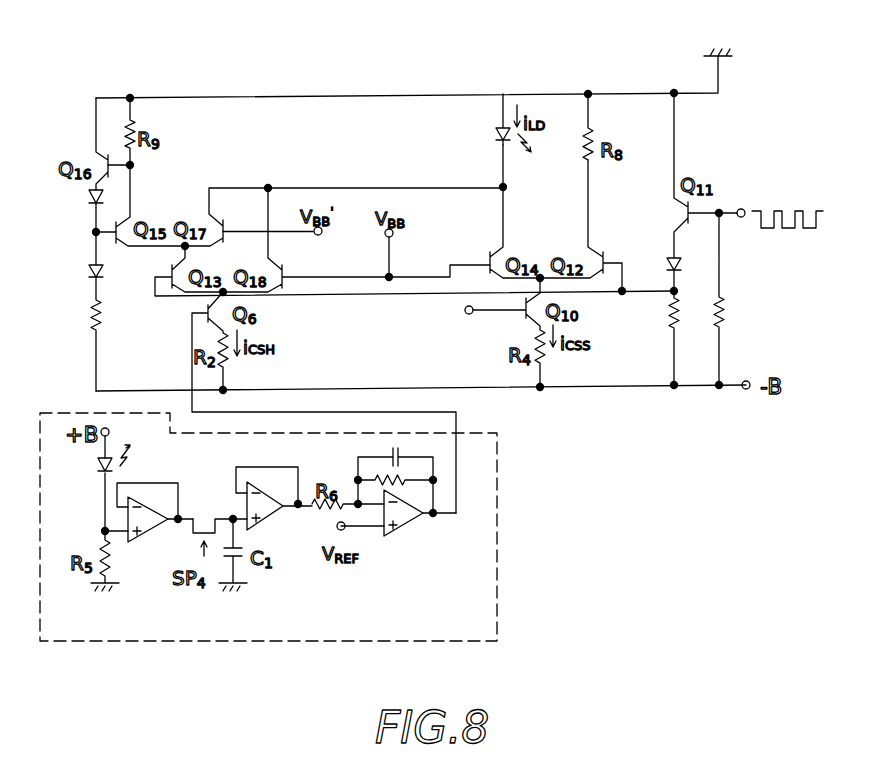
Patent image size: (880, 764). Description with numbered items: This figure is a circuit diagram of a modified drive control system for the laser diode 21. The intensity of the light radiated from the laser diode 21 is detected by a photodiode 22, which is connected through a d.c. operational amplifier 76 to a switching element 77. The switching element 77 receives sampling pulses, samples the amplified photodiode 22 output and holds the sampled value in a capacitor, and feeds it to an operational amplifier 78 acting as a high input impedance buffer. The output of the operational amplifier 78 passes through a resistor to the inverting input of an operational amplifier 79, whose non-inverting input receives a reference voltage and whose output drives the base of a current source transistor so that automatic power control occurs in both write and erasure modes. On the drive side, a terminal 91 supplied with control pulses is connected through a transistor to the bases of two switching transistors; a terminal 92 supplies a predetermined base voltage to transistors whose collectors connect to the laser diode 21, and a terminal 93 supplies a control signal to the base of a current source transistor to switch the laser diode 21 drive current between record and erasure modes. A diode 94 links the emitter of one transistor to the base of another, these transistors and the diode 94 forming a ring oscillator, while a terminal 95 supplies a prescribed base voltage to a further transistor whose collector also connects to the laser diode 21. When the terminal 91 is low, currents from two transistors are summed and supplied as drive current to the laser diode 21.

The laser diode 21 is at (497, 126).
The photodiode 22 is at (97, 471).
The operational amplifier 76 is at (145, 541).
The switching element 77 is at (203, 531).
The operational amplifier 78 is at (269, 523).
The operational amplifier 79 is at (405, 531).
The terminal 91 is at (741, 208).
The terminal 92 is at (393, 240).
The terminal 93 is at (468, 315).
The diode 94 is at (92, 196).
The terminal 95 is at (318, 236).